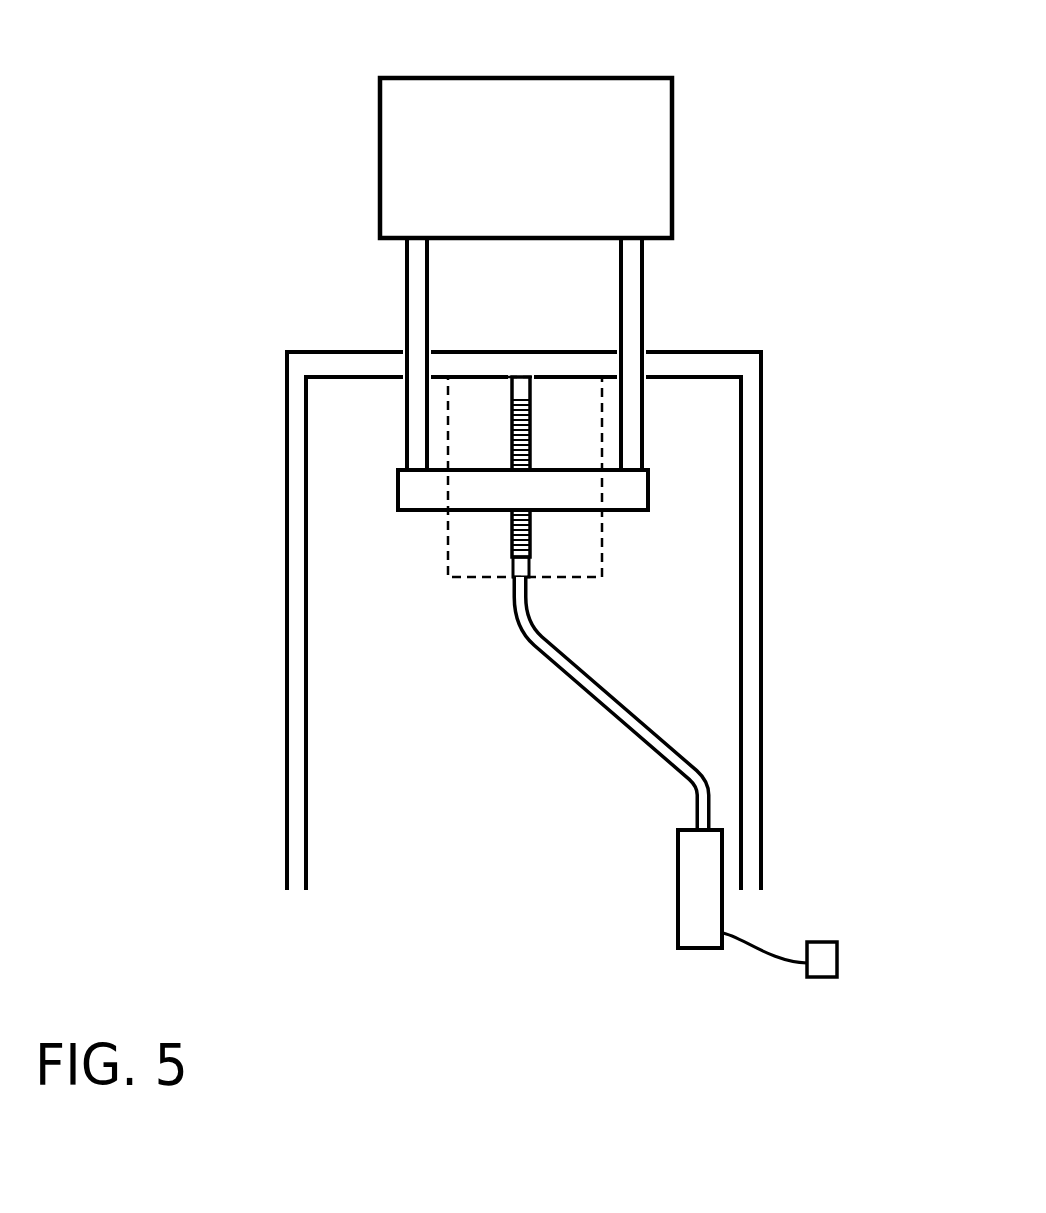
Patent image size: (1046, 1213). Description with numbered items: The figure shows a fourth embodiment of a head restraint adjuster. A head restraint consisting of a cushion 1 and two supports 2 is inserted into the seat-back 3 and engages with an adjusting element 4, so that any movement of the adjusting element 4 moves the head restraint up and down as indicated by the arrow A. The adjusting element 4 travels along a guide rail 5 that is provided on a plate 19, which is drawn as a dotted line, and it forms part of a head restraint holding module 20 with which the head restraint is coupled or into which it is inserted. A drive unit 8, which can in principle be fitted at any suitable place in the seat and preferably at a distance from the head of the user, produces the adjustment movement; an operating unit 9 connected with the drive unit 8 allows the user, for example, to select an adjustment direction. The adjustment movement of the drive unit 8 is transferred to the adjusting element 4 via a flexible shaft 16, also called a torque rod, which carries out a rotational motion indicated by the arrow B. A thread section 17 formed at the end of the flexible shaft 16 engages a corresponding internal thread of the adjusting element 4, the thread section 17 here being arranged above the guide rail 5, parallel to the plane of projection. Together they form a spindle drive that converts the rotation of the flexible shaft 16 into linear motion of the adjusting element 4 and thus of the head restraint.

The cushion 1 is at (655, 167).
The supports 2 is at (417, 305).
The seat-back 3 is at (752, 477).
The adjusting element 4 is at (407, 500).
The guide rail 5 is at (528, 383).
The drive unit 8 is at (690, 892).
The operating unit 9 is at (823, 955).
The flexible shaft 16 is at (580, 673).
The thread section 17 is at (520, 535).
The plate 19 is at (462, 577).
The head restraint holding module 20 is at (378, 455).
The arrow indicating up-and-down movement A is at (339, 296).
The arrow indicating rotational motion B is at (592, 704).